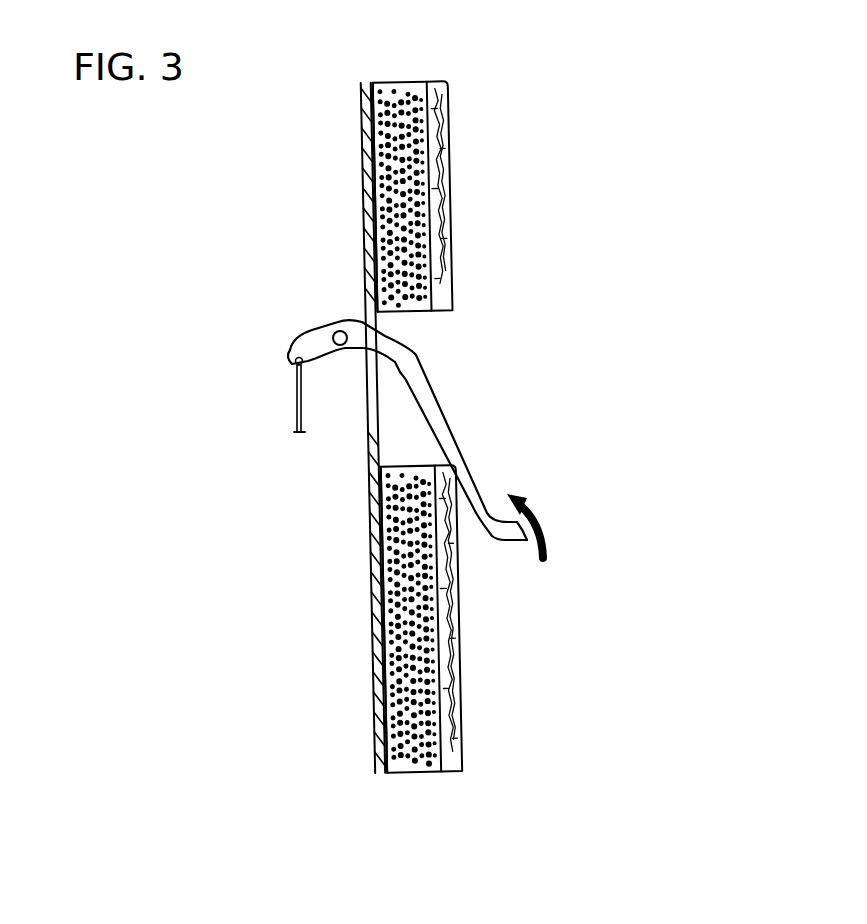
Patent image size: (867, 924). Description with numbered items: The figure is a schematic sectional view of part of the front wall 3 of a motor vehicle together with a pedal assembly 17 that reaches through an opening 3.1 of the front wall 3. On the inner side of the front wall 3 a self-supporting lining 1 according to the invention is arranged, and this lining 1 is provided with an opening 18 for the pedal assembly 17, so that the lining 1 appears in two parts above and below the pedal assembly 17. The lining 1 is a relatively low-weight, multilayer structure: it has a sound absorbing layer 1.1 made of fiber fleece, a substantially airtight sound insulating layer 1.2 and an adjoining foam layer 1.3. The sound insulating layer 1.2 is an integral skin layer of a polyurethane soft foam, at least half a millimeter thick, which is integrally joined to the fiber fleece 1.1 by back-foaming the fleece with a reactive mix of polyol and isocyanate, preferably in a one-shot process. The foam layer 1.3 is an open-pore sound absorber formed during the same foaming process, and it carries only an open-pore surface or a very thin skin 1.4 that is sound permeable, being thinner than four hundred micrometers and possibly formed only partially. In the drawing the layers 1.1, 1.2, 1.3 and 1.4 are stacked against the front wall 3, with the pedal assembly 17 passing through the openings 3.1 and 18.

The lining 1 is at (456, 93).
The sound absorbing layer 1.1 is at (447, 193).
The sound insulating layer 1.2 is at (420, 112).
The foam layer 1.3 is at (378, 236).
The thin skin 1.4 is at (386, 626).
The front wall 3 is at (363, 140).
The opening 3.1 is at (370, 397).
The pedal assembly 17 is at (448, 415).
The opening 18 is at (405, 330).